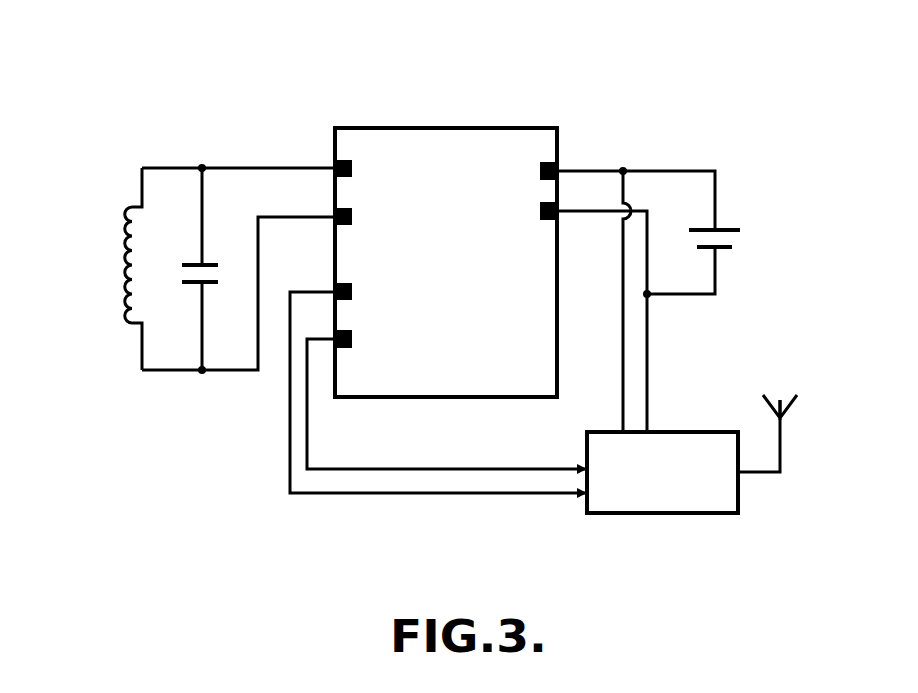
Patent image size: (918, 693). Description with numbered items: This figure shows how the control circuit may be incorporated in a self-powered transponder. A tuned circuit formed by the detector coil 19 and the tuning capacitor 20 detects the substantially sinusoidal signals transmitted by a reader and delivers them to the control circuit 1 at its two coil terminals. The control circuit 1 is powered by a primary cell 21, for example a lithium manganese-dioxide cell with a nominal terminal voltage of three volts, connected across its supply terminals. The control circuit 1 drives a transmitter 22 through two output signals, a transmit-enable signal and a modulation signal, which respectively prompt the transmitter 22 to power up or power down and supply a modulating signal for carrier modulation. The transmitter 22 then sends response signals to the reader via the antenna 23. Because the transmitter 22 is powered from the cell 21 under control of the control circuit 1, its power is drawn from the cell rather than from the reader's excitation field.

The control circuit 1 is at (463, 128).
The detector coil 19 is at (127, 220).
The tuning capacitor 20 is at (207, 263).
The primary cell 21 is at (723, 230).
The transmitter 22 is at (657, 513).
The antenna 23 is at (793, 403).